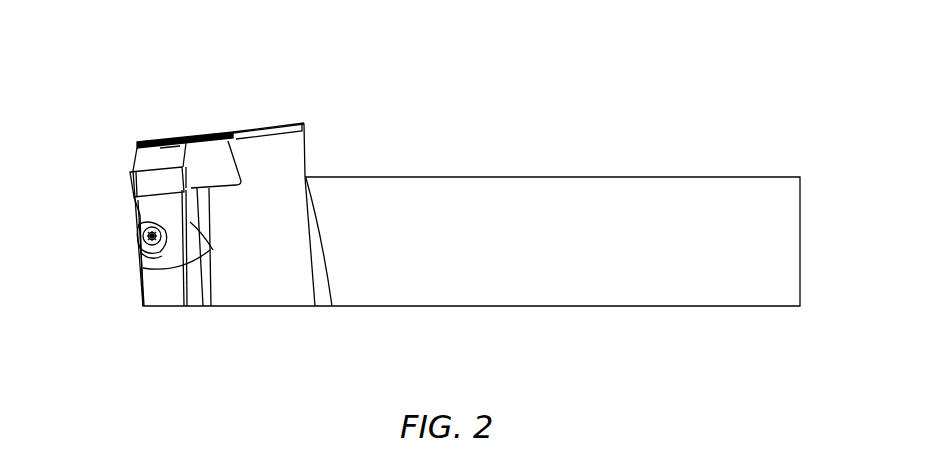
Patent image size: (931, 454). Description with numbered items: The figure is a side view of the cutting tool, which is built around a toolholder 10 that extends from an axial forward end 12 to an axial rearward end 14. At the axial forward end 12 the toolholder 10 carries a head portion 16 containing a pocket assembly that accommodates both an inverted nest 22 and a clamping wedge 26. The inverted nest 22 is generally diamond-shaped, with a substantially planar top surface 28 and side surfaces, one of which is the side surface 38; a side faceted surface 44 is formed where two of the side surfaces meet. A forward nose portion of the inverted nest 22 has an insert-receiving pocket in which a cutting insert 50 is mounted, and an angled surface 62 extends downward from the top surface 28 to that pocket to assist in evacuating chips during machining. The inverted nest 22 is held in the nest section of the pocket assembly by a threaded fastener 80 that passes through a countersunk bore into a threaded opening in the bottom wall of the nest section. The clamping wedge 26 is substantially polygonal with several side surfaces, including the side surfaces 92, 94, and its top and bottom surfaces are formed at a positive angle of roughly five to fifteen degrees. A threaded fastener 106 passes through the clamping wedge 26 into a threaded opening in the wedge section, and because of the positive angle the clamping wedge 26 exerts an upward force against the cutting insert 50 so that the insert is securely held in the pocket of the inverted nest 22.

The toolholder 10 is at (550, 87).
The axial forward end 12 is at (100, 162).
The axial rearward end 14 is at (808, 199).
The head portion 16 is at (115, 219).
The inverted nest 22 is at (133, 141).
The clamping wedge 26 is at (131, 264).
The top surface 28 is at (187, 142).
The side surface 38 is at (209, 170).
The side faceted surface 44 is at (233, 166).
The cutting insert 50 is at (126, 184).
The angled surface 62 is at (170, 158).
The threaded fastener 80 is at (155, 142).
The side surface 92 is at (213, 250).
The side surface 94 is at (177, 250).
The threaded fastener 106 is at (140, 245).